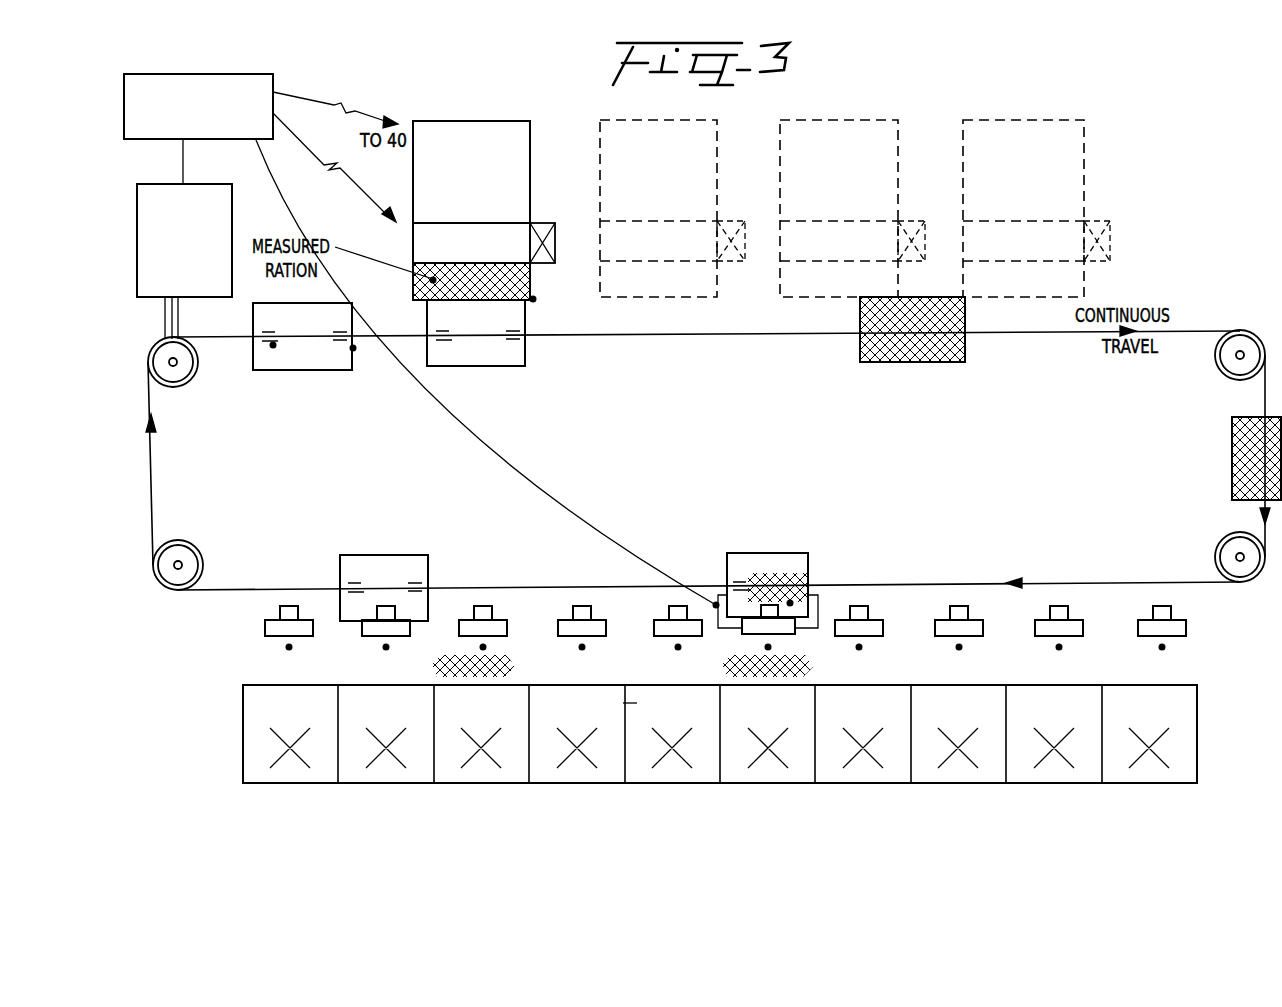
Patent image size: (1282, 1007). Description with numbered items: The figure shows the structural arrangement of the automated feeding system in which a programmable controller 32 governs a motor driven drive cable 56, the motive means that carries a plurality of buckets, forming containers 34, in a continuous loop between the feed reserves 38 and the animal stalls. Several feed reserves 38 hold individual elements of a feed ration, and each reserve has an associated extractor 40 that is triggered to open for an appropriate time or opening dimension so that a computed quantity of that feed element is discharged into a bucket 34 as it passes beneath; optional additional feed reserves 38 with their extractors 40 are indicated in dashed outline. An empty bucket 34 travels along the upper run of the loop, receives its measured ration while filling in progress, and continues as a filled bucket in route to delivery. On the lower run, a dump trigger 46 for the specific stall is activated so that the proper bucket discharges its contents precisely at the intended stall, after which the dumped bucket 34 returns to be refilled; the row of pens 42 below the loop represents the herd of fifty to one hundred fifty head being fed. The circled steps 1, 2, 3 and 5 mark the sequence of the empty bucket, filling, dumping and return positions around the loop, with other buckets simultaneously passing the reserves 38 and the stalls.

The programmable controller 32 is at (240, 77).
The motor driven drive cable 56 is at (203, 193).
The feed reserves 38 is at (520, 145).
The extractors 40 is at (542, 225).
The bucket 34 is at (427, 346).
The dump trigger 46 is at (873, 617).
The feeding pens 42 is at (1182, 687).
The step 1 empty bucket position 1 is at (353, 350).
The step 2 filling position 2 is at (534, 300).
The step 3 dumping position 3 is at (790, 603).
The step 5 empty bucket return 5 is at (273, 347).